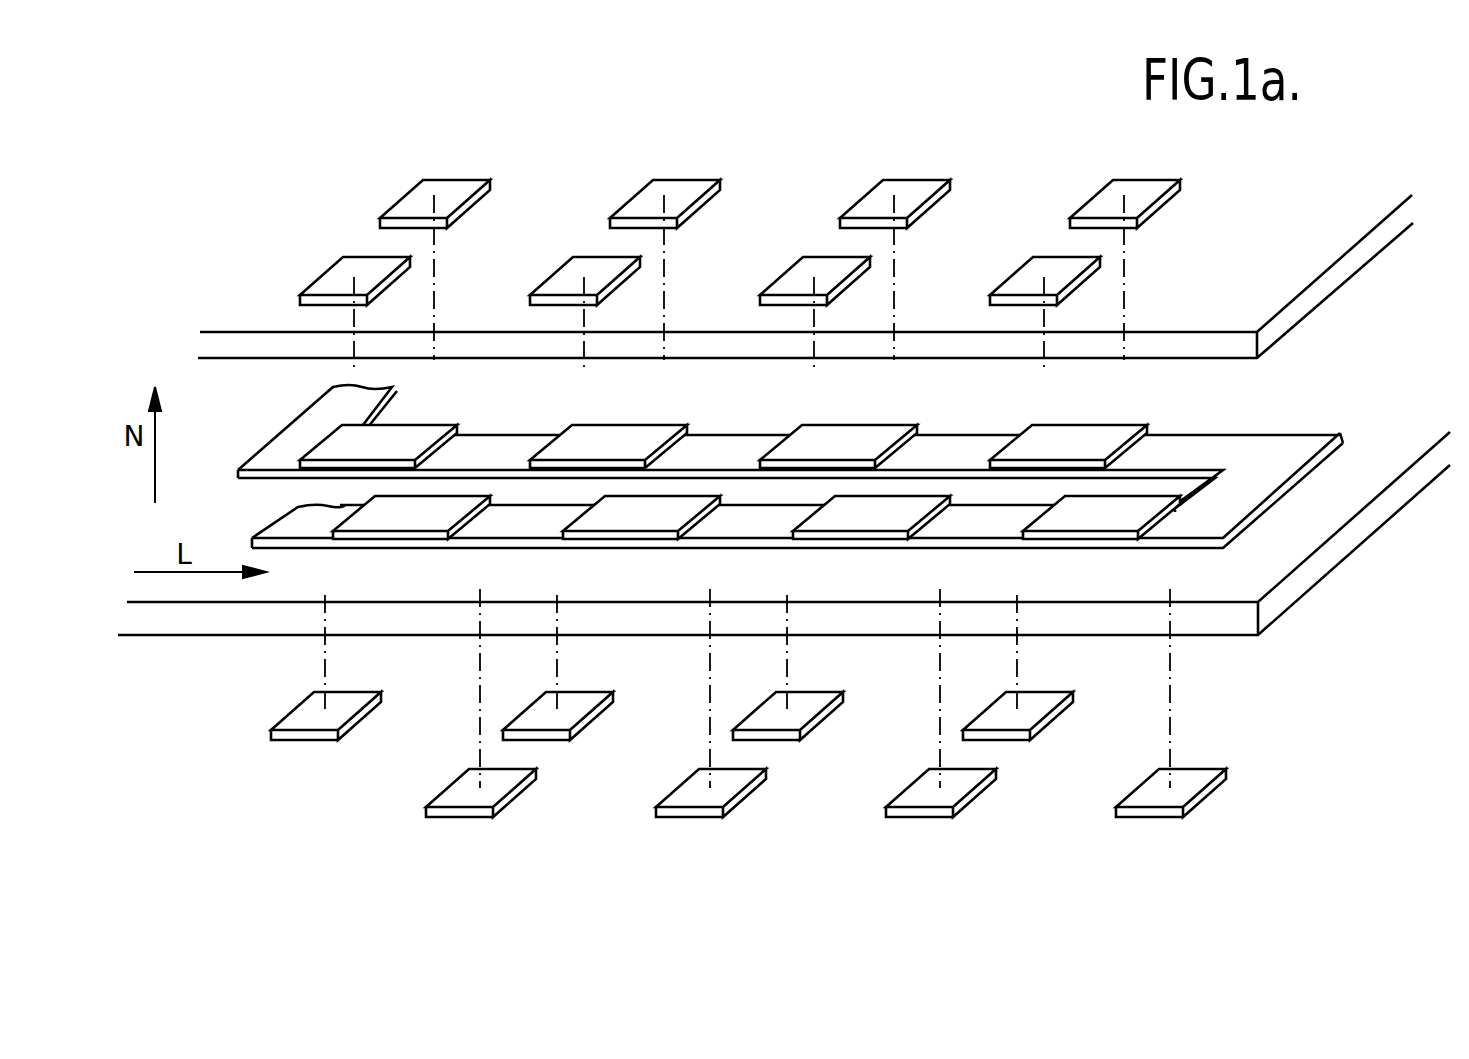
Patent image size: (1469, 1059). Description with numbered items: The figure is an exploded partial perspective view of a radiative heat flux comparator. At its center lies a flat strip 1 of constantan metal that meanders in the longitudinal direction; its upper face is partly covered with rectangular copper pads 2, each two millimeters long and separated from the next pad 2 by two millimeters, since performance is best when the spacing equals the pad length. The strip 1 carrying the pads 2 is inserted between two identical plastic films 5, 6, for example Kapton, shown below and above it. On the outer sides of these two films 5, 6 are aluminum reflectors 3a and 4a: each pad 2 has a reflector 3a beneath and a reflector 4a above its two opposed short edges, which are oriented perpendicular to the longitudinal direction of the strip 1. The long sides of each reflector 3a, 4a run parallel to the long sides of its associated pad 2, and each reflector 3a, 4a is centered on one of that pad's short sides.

The flat strip 1 is at (1258, 452).
The copper pads 2 is at (1103, 516).
The aluminum reflectors 3a is at (927, 788).
The aluminum reflectors 4a is at (1112, 207).
The plastic film 5 is at (1292, 593).
The plastic film 6 is at (1348, 268).